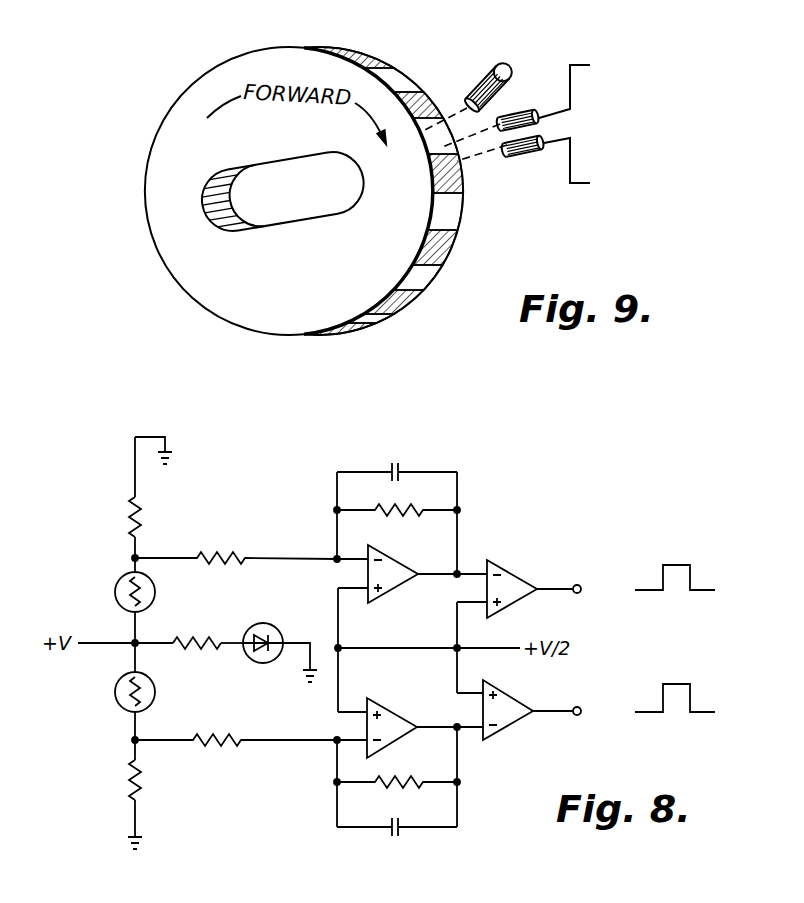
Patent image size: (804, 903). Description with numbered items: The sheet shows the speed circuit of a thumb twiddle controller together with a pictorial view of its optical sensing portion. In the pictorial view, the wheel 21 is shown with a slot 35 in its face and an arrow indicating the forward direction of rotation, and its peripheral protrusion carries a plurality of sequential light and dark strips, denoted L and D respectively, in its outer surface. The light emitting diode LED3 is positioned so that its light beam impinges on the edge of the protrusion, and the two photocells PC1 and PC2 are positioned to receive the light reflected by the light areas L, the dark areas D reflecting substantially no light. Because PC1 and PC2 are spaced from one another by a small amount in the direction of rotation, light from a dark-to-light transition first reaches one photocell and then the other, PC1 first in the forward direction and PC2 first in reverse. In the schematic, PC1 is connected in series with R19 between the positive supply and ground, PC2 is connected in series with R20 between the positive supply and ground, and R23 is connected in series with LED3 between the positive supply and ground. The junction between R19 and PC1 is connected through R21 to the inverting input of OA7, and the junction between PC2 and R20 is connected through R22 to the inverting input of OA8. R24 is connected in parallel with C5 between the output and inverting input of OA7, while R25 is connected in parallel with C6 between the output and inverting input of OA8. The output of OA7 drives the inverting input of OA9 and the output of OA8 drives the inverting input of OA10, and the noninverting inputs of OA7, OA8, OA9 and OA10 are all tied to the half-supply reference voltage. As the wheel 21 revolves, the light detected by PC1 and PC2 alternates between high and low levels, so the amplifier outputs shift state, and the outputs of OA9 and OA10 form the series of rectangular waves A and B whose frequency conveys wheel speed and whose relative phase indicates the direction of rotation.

In FIG. 9, the wheel 21 is at (223, 297).
In FIG. 9, the slot in disc 35 is at (285, 169).
In FIG. 9, the dark strip D is at (364, 50).
In FIG. 9, the light strip L is at (394, 67).
In FIG. 9, the light emitting diode LED3 is at (469, 88).
In FIG. 8, the light emitting diode LED3 is at (267, 631).
In FIG. 9, the photocell PC1 is at (515, 106).
In FIG. 8, the photocell PC1 is at (159, 592).
In FIG. 9, the photocell PC2 is at (523, 161).
In FIG. 8, the photocell PC2 is at (157, 692).
In FIG. 8, the resistor R19 is at (158, 517).
In FIG. 8, the resistor R20 is at (159, 782).
In FIG. 8, the resistor R21 is at (236, 543).
In FIG. 8, the resistor R22 is at (236, 754).
In FIG. 8, the resistor R23 is at (195, 630).
In FIG. 8, the resistor R24 is at (397, 524).
In FIG. 8, the resistor R25 is at (397, 793).
In FIG. 8, the capacitor C5 is at (397, 461).
In FIG. 8, the capacitor C6 is at (397, 842).
In FIG. 8, the operational amplifier OA7 is at (412, 583).
In FIG. 8, the operational amplifier OA8 is at (410, 719).
In FIG. 8, the operational amplifier OA9 is at (519, 581).
In FIG. 8, the operational amplifier OA10 is at (519, 708).
In FIG. 8, the rectangular wave A is at (675, 578).
In FIG. 8, the rectangular wave B is at (675, 698).